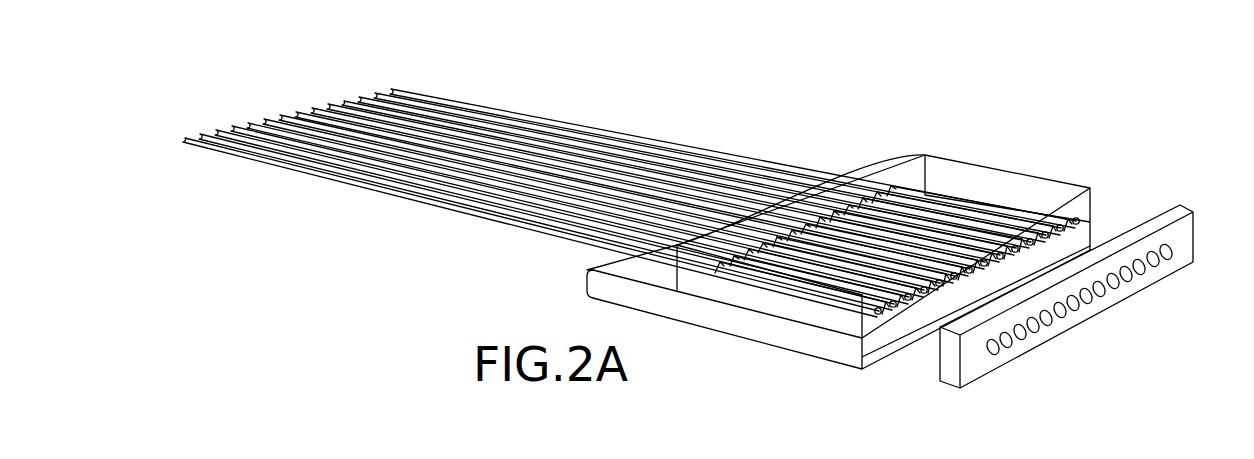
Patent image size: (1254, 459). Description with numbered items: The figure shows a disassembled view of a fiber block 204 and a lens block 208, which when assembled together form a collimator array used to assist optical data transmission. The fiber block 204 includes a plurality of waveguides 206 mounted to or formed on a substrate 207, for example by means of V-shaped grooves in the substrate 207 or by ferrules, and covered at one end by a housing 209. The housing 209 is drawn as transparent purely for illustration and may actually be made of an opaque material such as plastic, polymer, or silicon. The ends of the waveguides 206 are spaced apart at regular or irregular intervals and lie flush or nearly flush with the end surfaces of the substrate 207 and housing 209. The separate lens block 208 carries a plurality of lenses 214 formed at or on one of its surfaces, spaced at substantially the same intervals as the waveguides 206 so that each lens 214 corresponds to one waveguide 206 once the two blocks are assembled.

The fiber block 204 is at (1078, 135).
The plurality of waveguides 206 is at (380, 48).
The substrate 207 is at (783, 350).
The lens block 208 is at (1194, 216).
The housing 209 is at (983, 158).
The lenses 214 is at (1207, 292).